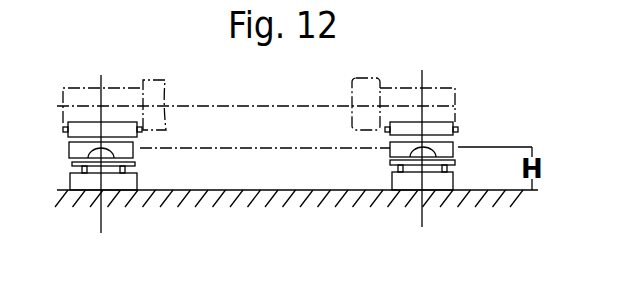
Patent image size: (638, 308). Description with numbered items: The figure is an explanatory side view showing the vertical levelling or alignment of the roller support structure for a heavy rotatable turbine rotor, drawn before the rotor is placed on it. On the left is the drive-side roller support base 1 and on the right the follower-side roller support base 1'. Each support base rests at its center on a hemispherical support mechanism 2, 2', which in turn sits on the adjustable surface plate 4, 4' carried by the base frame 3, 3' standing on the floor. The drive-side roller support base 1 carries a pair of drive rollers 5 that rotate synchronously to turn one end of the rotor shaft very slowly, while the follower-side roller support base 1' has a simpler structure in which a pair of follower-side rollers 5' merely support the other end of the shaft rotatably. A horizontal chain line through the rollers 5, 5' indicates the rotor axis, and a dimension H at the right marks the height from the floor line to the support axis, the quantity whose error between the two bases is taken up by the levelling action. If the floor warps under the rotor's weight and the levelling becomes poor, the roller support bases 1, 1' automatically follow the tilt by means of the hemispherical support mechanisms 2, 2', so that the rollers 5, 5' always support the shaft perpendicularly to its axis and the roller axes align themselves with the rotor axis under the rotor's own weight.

The drive-side roller support base 1 is at (131, 135).
The hemispherical support mechanism 2 is at (68, 150).
The base frame 3 is at (107, 209).
The adjustable surface plate 4 is at (120, 175).
The drive roller 5 is at (88, 116).
The follower-side roller support base 1' is at (410, 163).
The hemispherical support mechanism 2' is at (457, 134).
The base frame 3' is at (422, 209).
The adjustable surface plate 4' is at (442, 162).
The follower-side roller 5' is at (437, 97).